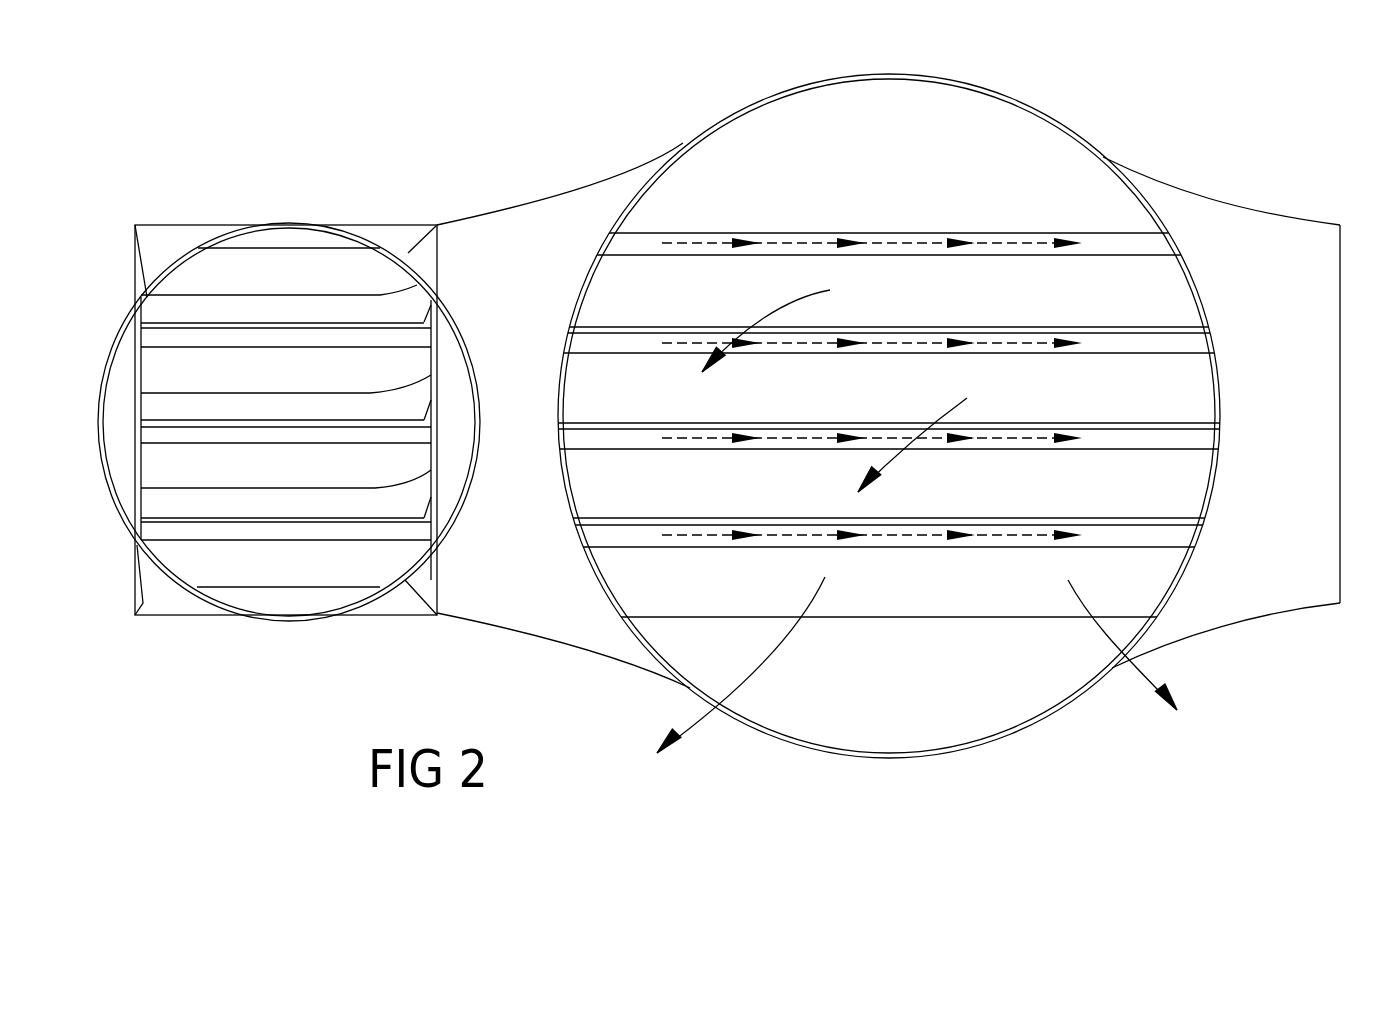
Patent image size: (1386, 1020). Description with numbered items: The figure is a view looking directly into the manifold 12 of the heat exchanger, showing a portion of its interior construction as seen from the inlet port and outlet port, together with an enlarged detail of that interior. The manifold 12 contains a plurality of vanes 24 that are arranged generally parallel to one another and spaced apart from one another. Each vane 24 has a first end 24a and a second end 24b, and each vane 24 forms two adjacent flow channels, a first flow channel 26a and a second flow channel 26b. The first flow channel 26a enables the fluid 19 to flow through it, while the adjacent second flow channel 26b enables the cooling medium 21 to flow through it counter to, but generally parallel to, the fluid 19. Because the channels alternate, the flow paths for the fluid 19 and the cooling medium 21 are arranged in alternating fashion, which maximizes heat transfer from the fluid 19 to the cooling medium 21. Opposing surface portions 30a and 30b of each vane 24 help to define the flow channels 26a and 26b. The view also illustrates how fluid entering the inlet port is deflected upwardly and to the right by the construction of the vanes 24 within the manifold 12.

The manifold 12 is at (368, 170).
The fluid 19 is at (903, 243).
The cooling medium 21 is at (697, 722).
The vanes 24 is at (740, 233).
The first end 24a is at (288, 260).
The second end 24b is at (1142, 240).
The first flow channel 26a is at (872, 232).
The second flow channel 26b is at (1049, 306).
The opposing surface portion 30a is at (383, 303).
The opposing surface portion 30b is at (1088, 245).